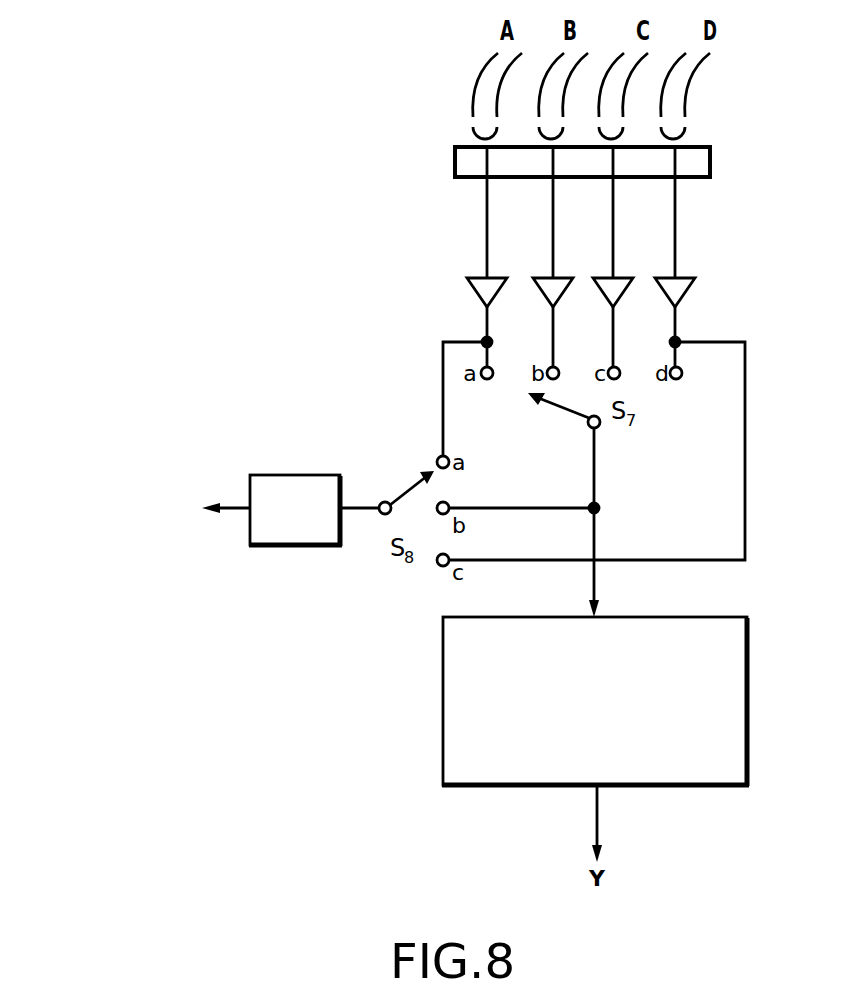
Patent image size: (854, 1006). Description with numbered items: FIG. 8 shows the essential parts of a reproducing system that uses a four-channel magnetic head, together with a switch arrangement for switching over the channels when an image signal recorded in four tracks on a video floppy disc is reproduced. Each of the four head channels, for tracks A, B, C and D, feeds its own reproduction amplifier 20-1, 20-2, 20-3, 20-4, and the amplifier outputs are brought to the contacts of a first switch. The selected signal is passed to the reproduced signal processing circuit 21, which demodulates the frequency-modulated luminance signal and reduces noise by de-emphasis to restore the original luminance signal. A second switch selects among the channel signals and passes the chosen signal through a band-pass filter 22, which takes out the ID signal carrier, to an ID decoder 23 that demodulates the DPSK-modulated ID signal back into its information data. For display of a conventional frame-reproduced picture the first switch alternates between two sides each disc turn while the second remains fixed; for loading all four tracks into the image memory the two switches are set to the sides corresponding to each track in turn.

The reproduction amplifier 20-1 is at (480, 277).
The reproduction amplifier 20-2 is at (546, 277).
The reproduction amplifier 20-3 is at (606, 277).
The reproduction amplifier 20-4 is at (681, 277).
The reproduced signal processing circuit 21 is at (443, 678).
The band-pass filter 22 is at (293, 475).
The ID decoder 23 is at (148, 511).